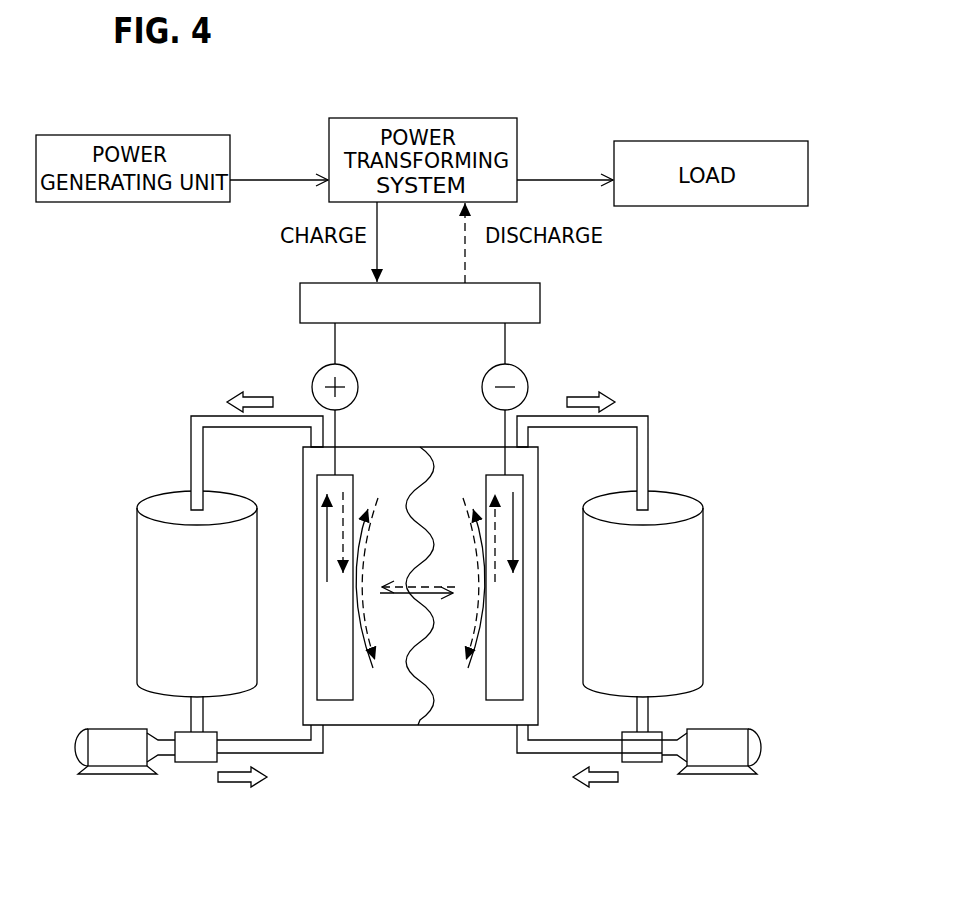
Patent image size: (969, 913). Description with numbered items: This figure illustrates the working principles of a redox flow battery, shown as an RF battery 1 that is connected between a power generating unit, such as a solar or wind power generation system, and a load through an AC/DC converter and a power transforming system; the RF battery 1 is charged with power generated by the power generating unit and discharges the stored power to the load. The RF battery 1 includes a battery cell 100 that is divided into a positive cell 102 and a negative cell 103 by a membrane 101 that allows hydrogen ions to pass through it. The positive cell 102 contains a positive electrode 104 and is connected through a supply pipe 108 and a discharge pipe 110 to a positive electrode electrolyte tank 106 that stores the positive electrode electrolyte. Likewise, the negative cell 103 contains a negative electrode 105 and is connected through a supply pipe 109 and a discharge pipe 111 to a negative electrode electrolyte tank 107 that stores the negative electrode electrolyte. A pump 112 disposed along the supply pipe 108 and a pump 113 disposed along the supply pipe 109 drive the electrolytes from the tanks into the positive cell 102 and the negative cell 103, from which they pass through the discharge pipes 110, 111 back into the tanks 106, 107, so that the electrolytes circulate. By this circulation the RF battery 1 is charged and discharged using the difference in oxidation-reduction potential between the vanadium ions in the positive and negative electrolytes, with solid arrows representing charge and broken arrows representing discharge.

The RF battery 1 is at (571, 348).
The battery cell 100 is at (386, 445).
The membrane 101 is at (420, 712).
The positive cell 102 is at (362, 725).
The negative cell 103 is at (478, 725).
The positive electrode 104 is at (317, 678).
The negative electrode 105 is at (523, 678).
The positive electrode electrolyte tank 106 is at (154, 494).
The negative electrode electrolyte tank 107 is at (684, 494).
The supply pipe 108 is at (290, 753).
The supply pipe 109 is at (548, 753).
The discharge pipe 110 is at (204, 416).
The discharge pipe 111 is at (635, 416).
The pump 112 is at (100, 729).
The pump 113 is at (738, 729).